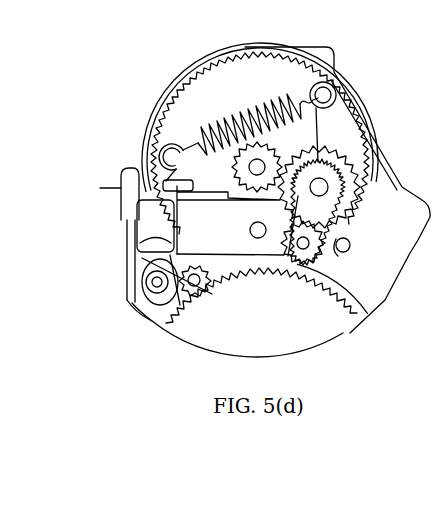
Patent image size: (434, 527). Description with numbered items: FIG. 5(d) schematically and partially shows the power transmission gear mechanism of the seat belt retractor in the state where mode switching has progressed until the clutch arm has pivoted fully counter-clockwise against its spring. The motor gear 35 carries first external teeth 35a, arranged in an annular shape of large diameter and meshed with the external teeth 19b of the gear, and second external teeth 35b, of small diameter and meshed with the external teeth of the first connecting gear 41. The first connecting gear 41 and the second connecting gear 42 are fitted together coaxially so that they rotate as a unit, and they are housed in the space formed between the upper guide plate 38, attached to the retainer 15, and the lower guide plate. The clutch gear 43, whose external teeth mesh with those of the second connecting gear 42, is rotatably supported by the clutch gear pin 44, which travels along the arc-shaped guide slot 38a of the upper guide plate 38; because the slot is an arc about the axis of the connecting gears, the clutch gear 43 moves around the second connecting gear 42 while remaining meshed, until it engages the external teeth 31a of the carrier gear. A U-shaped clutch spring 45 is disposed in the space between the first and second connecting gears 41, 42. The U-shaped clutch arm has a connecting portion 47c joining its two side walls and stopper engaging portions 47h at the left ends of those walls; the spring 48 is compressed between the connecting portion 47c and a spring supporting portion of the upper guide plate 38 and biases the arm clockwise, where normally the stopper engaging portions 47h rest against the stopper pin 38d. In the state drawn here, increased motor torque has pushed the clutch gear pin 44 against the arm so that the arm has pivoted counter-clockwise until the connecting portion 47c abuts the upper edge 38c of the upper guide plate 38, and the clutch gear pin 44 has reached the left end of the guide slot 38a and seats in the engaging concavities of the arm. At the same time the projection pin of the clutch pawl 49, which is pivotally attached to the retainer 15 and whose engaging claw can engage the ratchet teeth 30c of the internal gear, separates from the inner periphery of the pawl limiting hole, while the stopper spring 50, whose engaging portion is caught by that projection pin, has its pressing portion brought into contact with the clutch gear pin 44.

The retainer 15 is at (316, 55).
The external teeth 19b is at (341, 310).
The ratchet teeth 30c is at (157, 309).
The external teeth 31a is at (352, 291).
The motor gear 35 is at (260, 100).
The first external teeth 35a is at (176, 87).
The second external teeth 35b is at (270, 157).
The upper guide plate 38 is at (150, 224).
The guide slot 38a is at (349, 247).
The upper edge 38c is at (130, 189).
The stopper pin 38d is at (137, 217).
The first connecting gear 41 is at (333, 137).
The second connecting gear 42 is at (333, 184).
The clutch gear 43 is at (258, 248).
The clutch gear pin 44 is at (258, 215).
The clutch spring 45 is at (350, 222).
The connecting portion 47c is at (160, 182).
The stopper engaging portions 47h is at (145, 262).
The spring 48 is at (260, 107).
The clutch pawl 49 is at (128, 300).
The stopper spring 50 is at (157, 282).